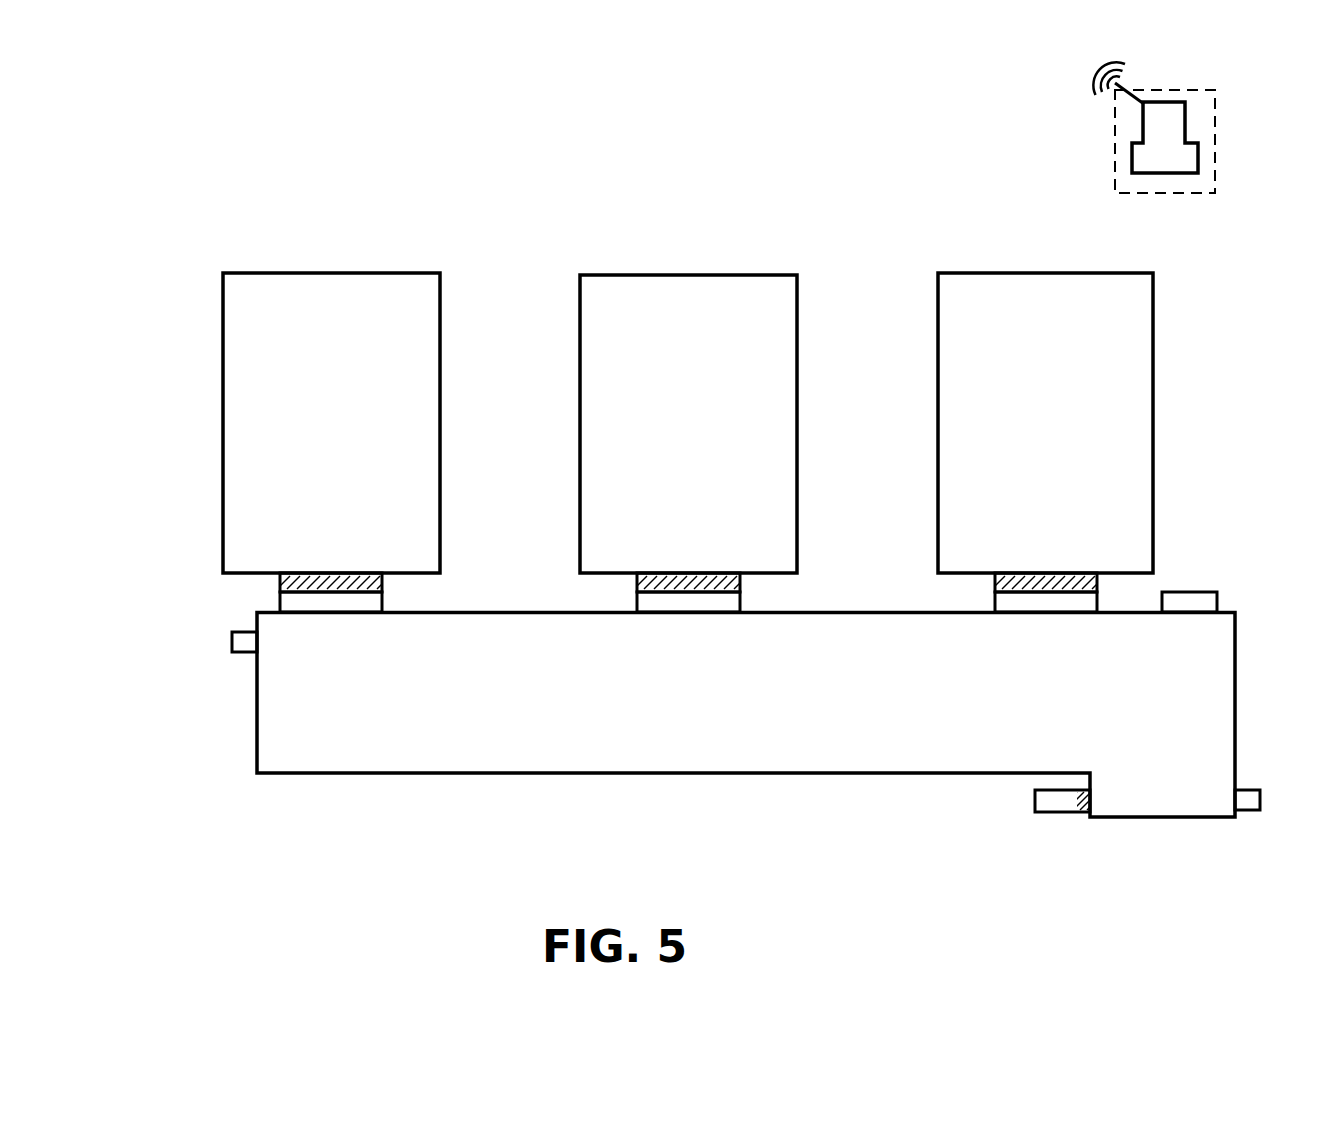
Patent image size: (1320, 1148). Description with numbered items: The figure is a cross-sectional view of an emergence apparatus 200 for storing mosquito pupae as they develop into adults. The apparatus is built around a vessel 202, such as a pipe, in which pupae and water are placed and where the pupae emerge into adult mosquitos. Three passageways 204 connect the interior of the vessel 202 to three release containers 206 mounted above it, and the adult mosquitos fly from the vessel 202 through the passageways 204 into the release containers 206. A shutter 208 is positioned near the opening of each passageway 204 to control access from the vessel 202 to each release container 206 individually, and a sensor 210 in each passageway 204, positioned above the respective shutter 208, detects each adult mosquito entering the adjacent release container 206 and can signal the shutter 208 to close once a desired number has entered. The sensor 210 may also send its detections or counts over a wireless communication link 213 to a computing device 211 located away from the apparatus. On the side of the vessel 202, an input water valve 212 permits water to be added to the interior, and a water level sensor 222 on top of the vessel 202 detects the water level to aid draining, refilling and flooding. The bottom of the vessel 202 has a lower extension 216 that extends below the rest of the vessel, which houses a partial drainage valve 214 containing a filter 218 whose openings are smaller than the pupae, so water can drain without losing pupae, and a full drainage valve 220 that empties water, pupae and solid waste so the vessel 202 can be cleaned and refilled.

The emergence apparatus 200 is at (213, 160).
The vessel 202 is at (255, 742).
The passageways 204 is at (403, 592).
The release containers 206 is at (433, 272).
The shutter 208 is at (280, 603).
The sensor 210 is at (280, 583).
The computing device 211 is at (1115, 160).
The input water valve 212 is at (240, 655).
The wireless communication link 213 is at (1090, 72).
The partial drainage valve 214 is at (1035, 800).
The lower extension 216 is at (1078, 780).
The filter 218 is at (1083, 813).
The full drainage valve 220 is at (1246, 812).
The water level sensor 222 is at (1208, 592).